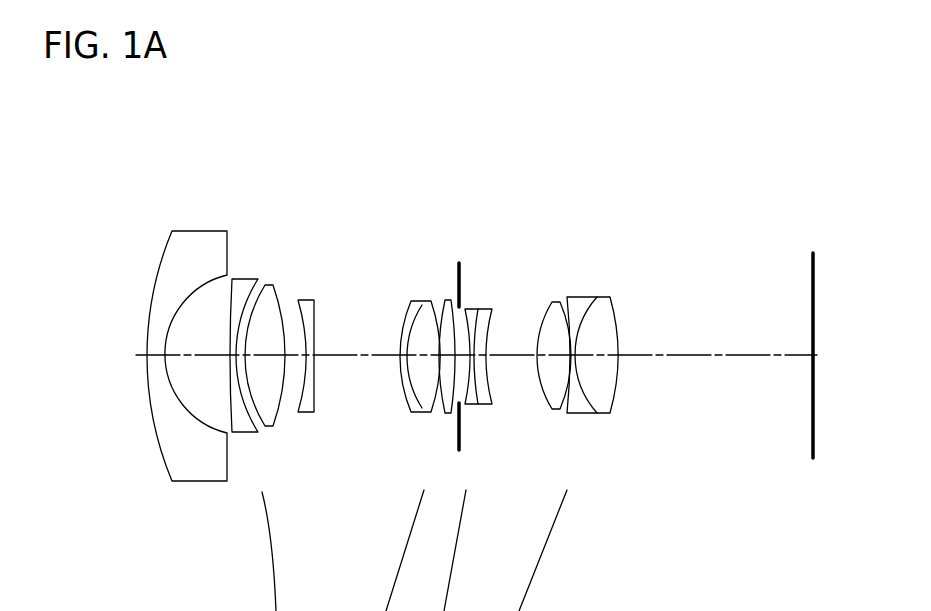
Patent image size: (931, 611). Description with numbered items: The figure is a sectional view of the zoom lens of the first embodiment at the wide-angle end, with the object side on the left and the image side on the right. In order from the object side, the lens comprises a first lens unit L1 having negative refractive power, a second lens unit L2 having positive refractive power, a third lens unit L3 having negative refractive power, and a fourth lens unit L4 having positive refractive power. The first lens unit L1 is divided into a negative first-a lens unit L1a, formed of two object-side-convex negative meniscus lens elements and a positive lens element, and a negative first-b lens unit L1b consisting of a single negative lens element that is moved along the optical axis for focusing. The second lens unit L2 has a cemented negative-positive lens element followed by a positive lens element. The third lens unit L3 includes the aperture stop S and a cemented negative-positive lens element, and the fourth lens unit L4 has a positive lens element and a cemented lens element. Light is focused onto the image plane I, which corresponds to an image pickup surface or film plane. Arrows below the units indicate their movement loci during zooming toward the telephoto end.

The first lens unit L1 is at (148, 152).
The first-a lens unit L1a is at (148, 191).
The first-b lens unit L1b is at (284, 191).
The second lens unit L2 is at (389, 152).
The third lens unit L3 is at (460, 152).
The fourth lens unit L4 is at (630, 152).
The aperture stop S is at (462, 280).
The image plane I is at (811, 279).